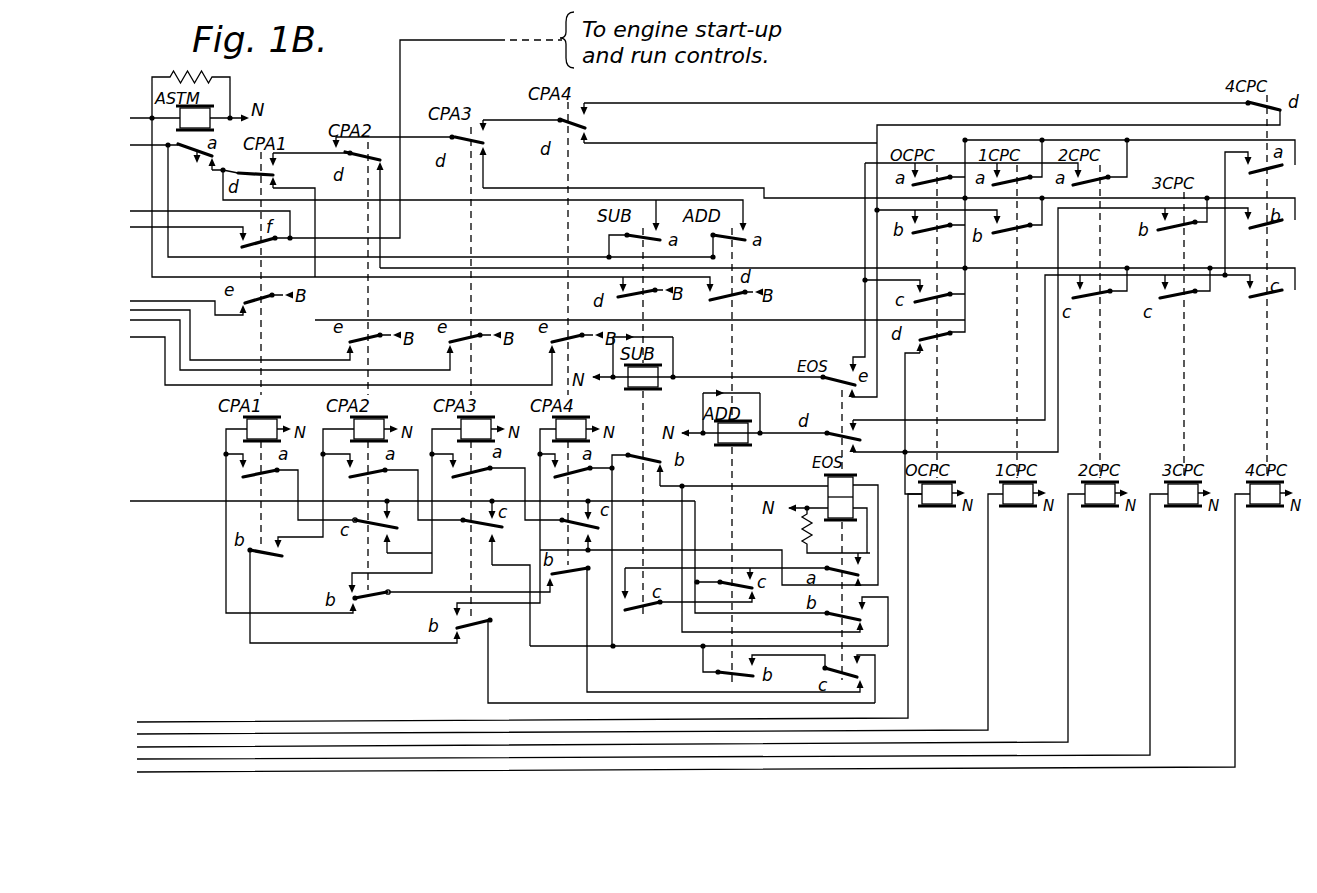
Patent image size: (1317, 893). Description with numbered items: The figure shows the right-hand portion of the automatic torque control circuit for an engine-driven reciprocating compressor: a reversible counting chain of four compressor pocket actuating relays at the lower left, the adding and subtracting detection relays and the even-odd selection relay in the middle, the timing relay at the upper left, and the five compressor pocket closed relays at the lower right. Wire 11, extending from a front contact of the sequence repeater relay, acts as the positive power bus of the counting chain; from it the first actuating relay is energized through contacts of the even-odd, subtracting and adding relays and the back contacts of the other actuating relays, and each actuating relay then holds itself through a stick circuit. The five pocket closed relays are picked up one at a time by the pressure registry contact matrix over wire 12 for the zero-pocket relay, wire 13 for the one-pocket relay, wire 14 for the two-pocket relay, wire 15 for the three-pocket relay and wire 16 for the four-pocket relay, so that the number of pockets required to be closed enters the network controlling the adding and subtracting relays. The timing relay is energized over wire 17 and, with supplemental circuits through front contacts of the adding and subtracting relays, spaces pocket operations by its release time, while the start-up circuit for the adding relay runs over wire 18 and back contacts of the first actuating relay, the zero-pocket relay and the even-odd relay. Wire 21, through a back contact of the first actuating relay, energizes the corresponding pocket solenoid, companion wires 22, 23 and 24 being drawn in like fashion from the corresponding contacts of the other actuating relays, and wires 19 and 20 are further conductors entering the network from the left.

The wire 11 is at (412, 491).
The wire 12 is at (529, 608).
The wire 13 is at (203, 734).
The wire 14 is at (228, 747).
The wire 15 is at (152, 759).
The wire 16 is at (192, 772).
The wire 17 is at (188, 108).
The wire 18 is at (154, 135).
The conductor 19 is at (210, 215).
The conductor 20 is at (188, 239).
The wire 21 is at (188, 298).
The conductor 22 is at (160, 309).
The conductor 23 is at (292, 345).
The conductor 24 is at (343, 361).